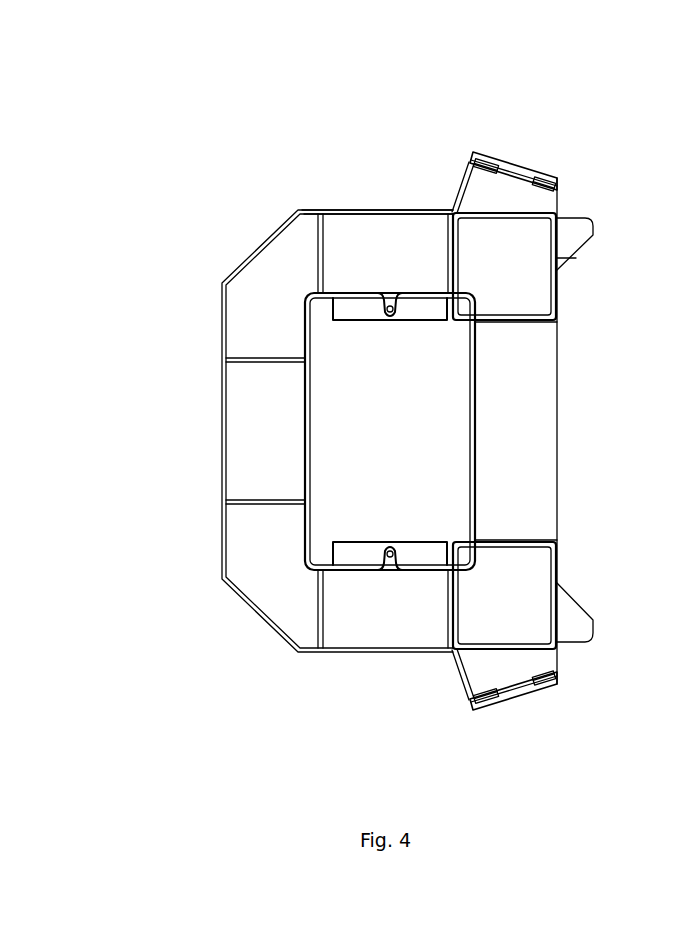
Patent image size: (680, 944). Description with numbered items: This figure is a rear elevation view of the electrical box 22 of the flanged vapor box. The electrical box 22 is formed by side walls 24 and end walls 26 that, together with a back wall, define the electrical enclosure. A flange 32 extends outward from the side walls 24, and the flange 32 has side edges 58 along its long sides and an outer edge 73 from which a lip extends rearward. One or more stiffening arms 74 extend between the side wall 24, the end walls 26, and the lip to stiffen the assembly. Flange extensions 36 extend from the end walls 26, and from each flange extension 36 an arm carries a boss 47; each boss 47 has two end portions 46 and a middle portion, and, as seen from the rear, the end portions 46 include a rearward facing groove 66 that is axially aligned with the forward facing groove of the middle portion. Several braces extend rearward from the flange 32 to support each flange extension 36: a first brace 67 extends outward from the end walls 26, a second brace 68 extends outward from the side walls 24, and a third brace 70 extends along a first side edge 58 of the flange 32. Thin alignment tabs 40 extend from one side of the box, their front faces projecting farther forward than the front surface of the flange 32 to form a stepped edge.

The electrical box 22 is at (204, 202).
The outer edge 73 is at (330, 210).
The stiffening arms 74 is at (268, 363).
The first brace 67 is at (447, 246).
The side walls 24 is at (476, 425).
The end walls 26 is at (352, 570).
The flange 32 is at (526, 480).
The side edges 58 is at (558, 425).
The second brace 68 is at (518, 325).
The flange extensions 36 is at (490, 210).
The boss 47 is at (522, 160).
The rearward facing groove 66 is at (557, 188).
The end portions 46 is at (487, 150).
The alignment tabs 40 is at (597, 228).
The third brace 70 is at (563, 258).